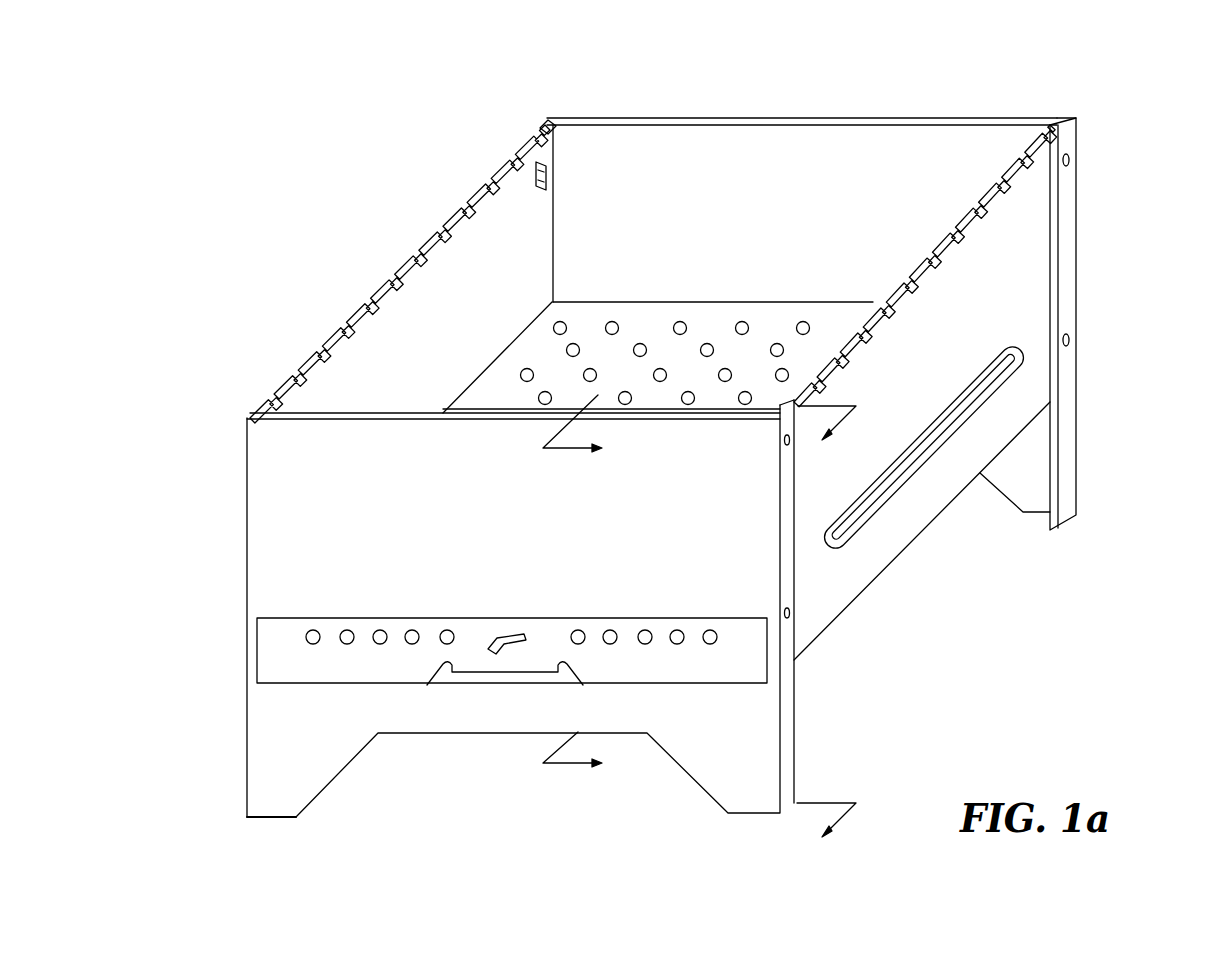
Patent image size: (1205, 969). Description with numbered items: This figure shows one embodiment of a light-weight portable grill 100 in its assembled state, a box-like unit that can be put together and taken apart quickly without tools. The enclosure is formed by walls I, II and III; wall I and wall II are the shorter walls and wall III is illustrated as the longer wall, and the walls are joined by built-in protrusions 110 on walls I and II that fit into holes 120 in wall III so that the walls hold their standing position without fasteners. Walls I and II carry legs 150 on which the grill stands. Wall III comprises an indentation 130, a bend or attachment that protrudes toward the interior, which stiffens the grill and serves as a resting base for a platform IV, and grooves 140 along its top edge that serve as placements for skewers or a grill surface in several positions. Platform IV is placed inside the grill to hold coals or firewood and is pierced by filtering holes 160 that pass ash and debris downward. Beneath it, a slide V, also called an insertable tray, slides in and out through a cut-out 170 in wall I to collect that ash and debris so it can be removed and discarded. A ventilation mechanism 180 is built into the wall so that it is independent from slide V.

The portable grill 100 is at (800, 61).
The protrusion 110 is at (546, 128).
The hole 120 is at (539, 165).
The indentation 130 is at (878, 505).
The groove 140 is at (372, 297).
The leg 150 is at (245, 803).
The filtering hole 160 is at (681, 322).
The cut-out 170 is at (270, 618).
The ventilation mechanism 180 is at (413, 630).
The wall I is at (313, 483).
The wall II is at (870, 185).
The wall III is at (477, 287).
The platform IV is at (555, 368).
The slide V is at (730, 667).